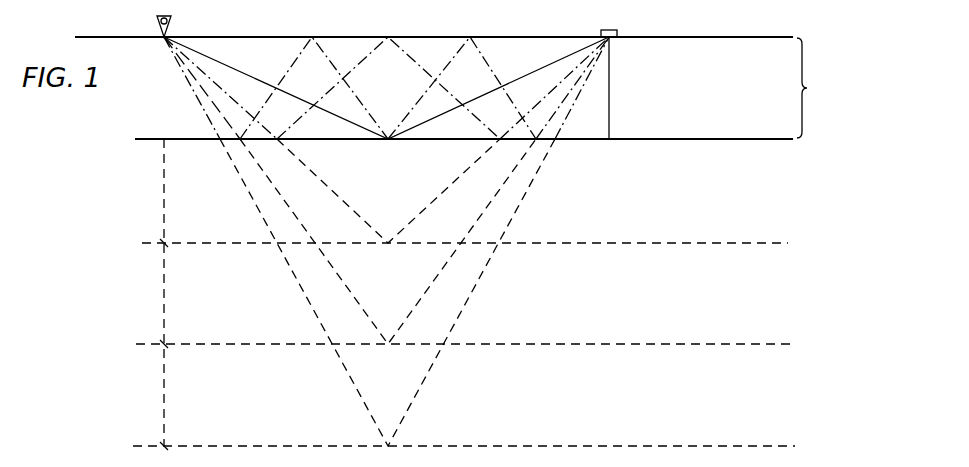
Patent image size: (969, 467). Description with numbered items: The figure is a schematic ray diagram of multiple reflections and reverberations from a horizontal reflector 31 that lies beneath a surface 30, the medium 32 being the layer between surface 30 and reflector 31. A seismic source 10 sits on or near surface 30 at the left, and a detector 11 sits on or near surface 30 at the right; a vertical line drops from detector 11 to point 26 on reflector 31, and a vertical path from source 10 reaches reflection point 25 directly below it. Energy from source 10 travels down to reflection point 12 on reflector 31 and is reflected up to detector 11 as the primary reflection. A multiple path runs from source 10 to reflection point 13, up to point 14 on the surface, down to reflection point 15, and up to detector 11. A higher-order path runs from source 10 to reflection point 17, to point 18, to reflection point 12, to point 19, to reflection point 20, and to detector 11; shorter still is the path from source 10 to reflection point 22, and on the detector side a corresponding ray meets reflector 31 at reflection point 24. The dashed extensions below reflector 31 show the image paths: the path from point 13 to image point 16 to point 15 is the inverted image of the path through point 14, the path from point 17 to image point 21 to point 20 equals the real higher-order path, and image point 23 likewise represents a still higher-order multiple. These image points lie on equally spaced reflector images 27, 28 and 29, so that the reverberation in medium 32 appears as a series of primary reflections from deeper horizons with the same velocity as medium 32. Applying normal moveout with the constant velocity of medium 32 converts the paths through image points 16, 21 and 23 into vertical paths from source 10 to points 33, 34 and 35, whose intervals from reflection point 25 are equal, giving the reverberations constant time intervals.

The seismic source 10 is at (172, 20).
The detector 11 is at (604, 30).
The reflection point 12 is at (388, 141).
The reflection point 13 is at (277, 141).
The point on the surface 14 is at (388, 35).
The reflection point 15 is at (500, 141).
The image point 16 is at (388, 245).
The reflection point 17 is at (239, 141).
The point 18 is at (312, 35).
The point 19 is at (470, 35).
The reflection point 20 is at (536, 141).
The image point 21 is at (388, 346).
The reflection point 22 is at (219, 141).
The image point 23 is at (388, 448).
The reflection point 24 is at (555, 141).
The reflection point 25 is at (162, 141).
The point 26 is at (610, 141).
The reflector image 27 is at (648, 243).
The reflector image 28 is at (606, 344).
The reflector image 29 is at (586, 446).
The surface 30 is at (655, 37).
The reflector 31 is at (655, 140).
The medium 32 is at (837, 88).
The point 33 is at (163, 244).
The point 34 is at (163, 345).
The point 35 is at (163, 444).